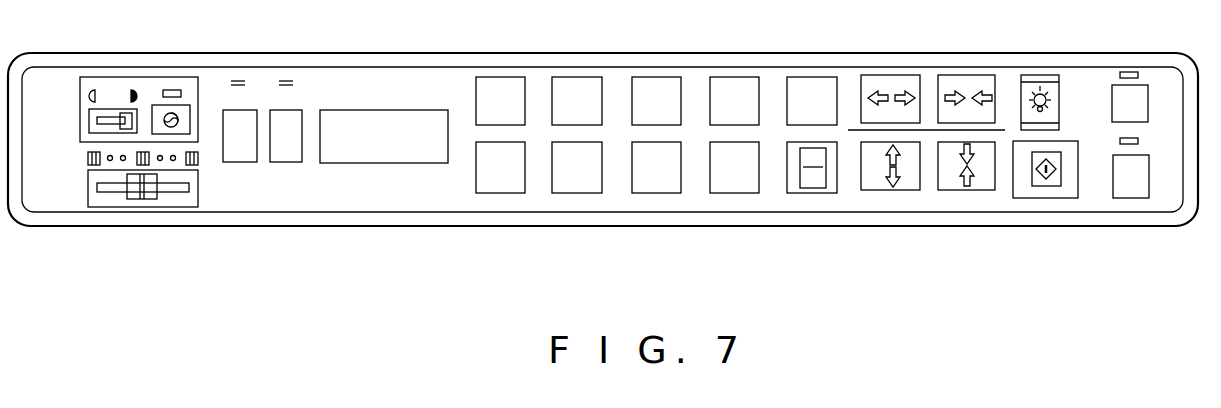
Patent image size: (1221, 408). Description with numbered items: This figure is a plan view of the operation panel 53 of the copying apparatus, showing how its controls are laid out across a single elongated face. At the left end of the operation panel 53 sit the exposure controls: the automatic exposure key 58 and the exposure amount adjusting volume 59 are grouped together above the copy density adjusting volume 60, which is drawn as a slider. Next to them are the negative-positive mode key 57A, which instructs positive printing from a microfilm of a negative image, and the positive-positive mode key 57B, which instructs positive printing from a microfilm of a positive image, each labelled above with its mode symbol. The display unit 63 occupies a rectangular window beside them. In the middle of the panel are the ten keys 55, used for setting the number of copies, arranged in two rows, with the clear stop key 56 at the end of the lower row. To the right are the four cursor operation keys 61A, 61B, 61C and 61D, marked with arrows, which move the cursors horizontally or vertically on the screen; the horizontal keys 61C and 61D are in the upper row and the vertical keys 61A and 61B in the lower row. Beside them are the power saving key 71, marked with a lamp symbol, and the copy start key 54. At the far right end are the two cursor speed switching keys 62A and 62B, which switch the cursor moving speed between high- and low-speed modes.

The operation panel 53 is at (624, 53).
The copy start key 54 is at (1060, 198).
The ten keys 55 is at (588, 194).
The clear stop key 56 is at (817, 184).
The negative-positive (N-P) mode key 57A is at (240, 161).
The positive-positive (P-P) mode key 57B is at (283, 161).
The automatic exposure key 58 is at (183, 104).
The exposure amount adjusting volume 59 is at (108, 108).
The copy density adjusting volume 60 is at (107, 207).
The cursor operation key 61A is at (907, 192).
The cursor operation key 61B is at (987, 190).
The cursor operation key 61C is at (893, 75).
The cursor operation key 61D is at (976, 75).
The cursor speed switching key 62A is at (1148, 88).
The cursor speed switching key 62B is at (1150, 188).
The display unit 63 is at (392, 115).
The power saving key 71 is at (1050, 75).